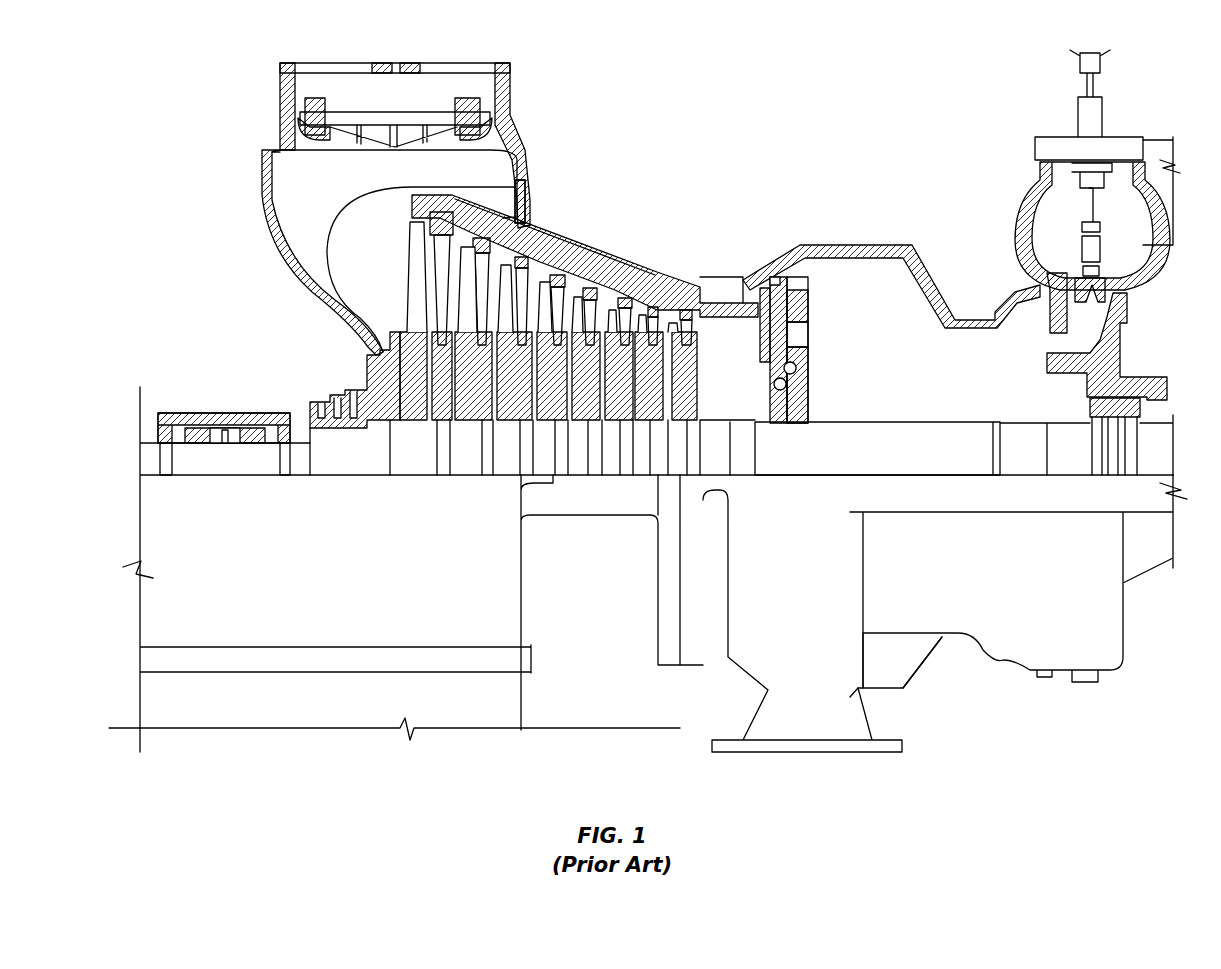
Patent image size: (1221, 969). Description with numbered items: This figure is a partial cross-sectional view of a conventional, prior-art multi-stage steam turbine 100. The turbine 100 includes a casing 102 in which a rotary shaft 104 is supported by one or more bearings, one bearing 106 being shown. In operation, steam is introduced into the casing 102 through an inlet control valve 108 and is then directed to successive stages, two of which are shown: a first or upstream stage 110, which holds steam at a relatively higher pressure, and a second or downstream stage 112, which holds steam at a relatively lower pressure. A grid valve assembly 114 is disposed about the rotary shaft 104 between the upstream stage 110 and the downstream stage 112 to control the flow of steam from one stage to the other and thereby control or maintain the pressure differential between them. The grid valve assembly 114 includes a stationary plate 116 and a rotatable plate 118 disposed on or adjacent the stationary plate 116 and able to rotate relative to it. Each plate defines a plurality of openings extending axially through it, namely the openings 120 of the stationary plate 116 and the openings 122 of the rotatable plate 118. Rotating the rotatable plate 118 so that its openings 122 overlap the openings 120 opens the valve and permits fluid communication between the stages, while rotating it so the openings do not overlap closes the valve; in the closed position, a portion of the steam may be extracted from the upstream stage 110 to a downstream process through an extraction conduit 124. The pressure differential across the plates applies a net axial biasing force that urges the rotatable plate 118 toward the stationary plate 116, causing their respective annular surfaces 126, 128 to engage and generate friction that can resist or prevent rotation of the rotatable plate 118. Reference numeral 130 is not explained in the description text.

The multi-stage steam turbine 100 is at (734, 120).
The casing 102 is at (570, 248).
The rotary shaft 104 is at (812, 460).
The bearing 106 is at (202, 437).
The inlet control valve 108 is at (1083, 252).
The upstream stage 110 is at (1032, 355).
The downstream stage 112 is at (750, 417).
The grid valve assembly 114 is at (816, 297).
The stationary plate 116 is at (772, 280).
The rotatable plate 118 is at (797, 290).
The openings of the stationary plate 120 is at (766, 333).
The openings of the rotatable plate 122 is at (810, 331).
The extraction conduit 124 is at (845, 695).
The annular surface of the rotatable plate 126 is at (782, 372).
The annular surface of the stationary plate 128 is at (778, 370).
The turbine disk 130 is at (810, 362).